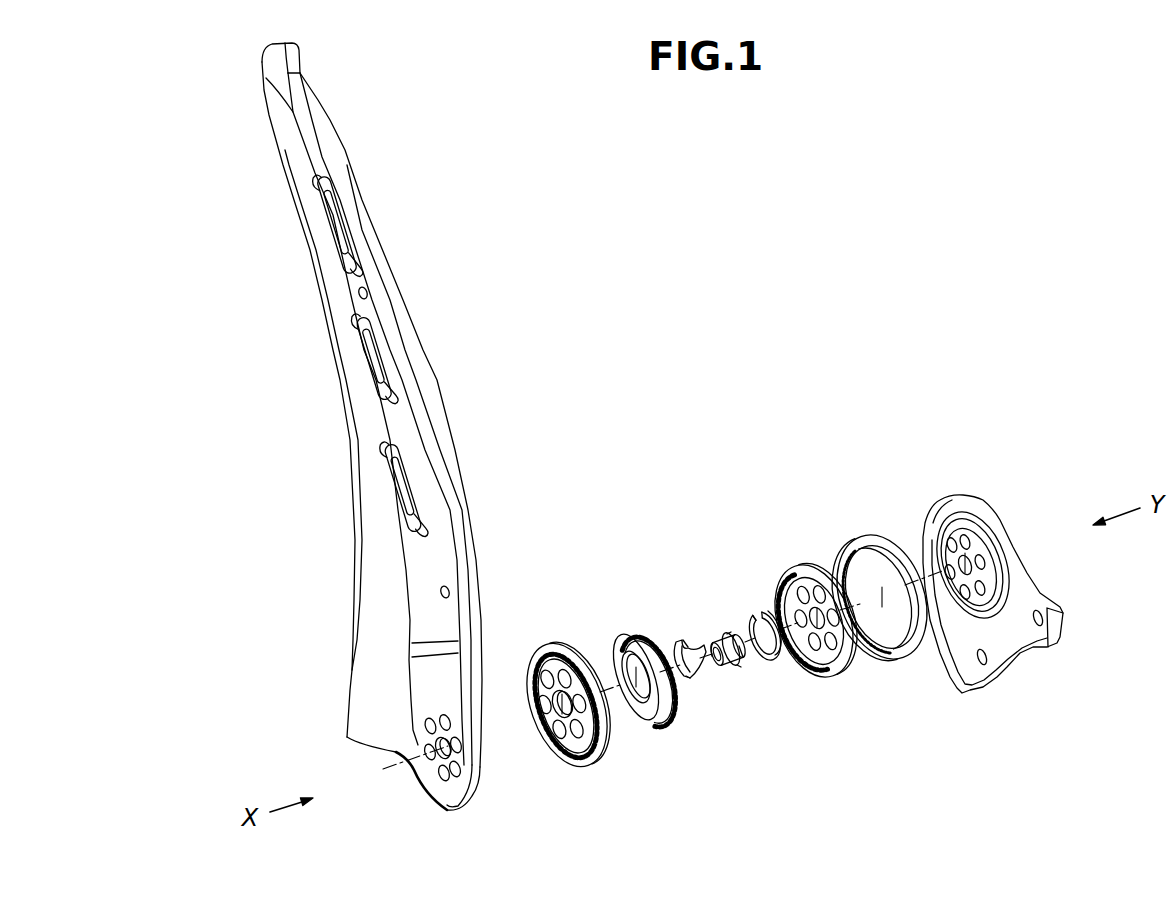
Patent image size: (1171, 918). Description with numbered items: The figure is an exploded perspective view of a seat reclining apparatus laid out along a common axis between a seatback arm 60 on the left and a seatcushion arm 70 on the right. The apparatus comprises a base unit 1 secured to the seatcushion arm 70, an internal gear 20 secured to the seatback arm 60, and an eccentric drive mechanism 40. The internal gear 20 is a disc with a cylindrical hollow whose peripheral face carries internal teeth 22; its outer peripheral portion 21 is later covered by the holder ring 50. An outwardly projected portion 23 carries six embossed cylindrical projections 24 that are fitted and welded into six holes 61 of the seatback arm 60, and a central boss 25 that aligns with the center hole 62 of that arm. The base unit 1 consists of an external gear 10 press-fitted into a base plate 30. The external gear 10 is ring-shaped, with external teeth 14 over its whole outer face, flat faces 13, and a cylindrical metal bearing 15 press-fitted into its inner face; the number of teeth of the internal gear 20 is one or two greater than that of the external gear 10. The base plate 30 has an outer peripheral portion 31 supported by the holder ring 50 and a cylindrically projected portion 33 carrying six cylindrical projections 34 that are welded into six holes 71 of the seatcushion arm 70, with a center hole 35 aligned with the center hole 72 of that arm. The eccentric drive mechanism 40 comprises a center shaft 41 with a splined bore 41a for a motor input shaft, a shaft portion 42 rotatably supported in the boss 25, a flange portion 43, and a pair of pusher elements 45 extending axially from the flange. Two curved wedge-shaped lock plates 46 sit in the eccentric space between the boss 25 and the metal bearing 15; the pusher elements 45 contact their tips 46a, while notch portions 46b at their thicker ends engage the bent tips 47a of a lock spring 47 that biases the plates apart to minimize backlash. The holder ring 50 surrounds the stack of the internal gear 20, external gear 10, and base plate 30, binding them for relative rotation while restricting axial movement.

The base unit 1 is at (655, 837).
The external gear 10 is at (639, 716).
The flat faces 13 is at (630, 712).
The external teeth 14 is at (652, 722).
The cylindrical metal bearing 15 is at (624, 656).
The internal gear 20 is at (556, 713).
The outer peripheral portion 21 is at (540, 656).
The internal teeth 22 is at (560, 657).
The outwardly projected portion 23 is at (574, 740).
The cylindrical projections 24 is at (550, 735).
The boss 25 is at (555, 698).
The base plate 30 is at (822, 678).
The outer peripheral portion 31 is at (816, 680).
The cylindrically projected portion 33 is at (839, 635).
The cylindrical projections 34 is at (799, 598).
The center hole 35 is at (812, 600).
The eccentric drive mechanism 40 is at (712, 665).
The center shaft 41 is at (718, 642).
The splined bore 41a is at (714, 646).
The shaft portion 42 is at (737, 668).
The flange portion 43 is at (722, 640).
The pusher elements 45 is at (718, 663).
The lock plates 46 is at (665, 640).
The tip 46a is at (695, 680).
The notch portion 46b is at (688, 640).
The lock spring 47 is at (773, 637).
The tips 47a is at (780, 671).
The holder ring 50 is at (893, 662).
The seatback arm 60 is at (372, 459).
The holes 61 is at (441, 757).
The center hole 62 is at (433, 762).
The seatcushion arm 70 is at (995, 563).
The holes 71 is at (957, 535).
The center hole 72 is at (972, 568).